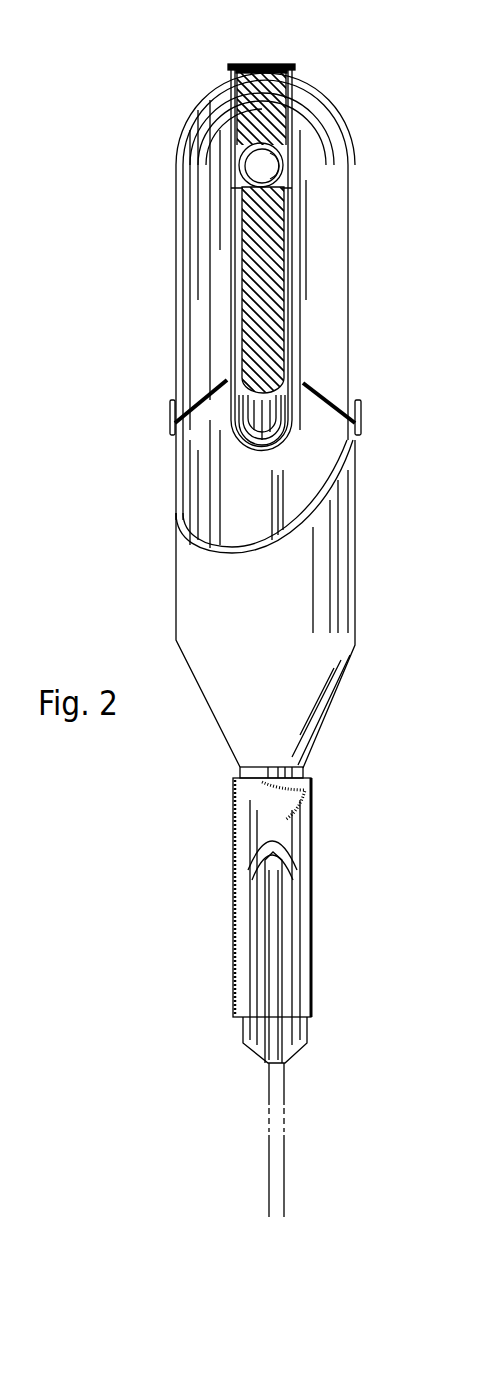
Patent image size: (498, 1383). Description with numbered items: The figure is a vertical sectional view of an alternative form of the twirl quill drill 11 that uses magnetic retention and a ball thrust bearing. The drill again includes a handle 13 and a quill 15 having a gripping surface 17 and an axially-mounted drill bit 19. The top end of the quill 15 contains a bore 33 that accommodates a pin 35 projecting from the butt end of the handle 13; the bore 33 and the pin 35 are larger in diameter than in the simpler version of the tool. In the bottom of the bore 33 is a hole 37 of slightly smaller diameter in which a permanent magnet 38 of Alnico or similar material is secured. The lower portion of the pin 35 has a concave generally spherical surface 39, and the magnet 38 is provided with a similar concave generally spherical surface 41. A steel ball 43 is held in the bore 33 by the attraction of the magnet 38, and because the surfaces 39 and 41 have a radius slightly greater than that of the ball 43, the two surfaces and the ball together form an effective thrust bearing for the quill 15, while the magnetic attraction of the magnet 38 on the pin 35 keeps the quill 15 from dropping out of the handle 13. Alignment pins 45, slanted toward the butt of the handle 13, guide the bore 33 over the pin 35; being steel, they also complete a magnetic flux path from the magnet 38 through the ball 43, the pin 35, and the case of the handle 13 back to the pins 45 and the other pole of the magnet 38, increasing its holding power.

The twirl quill drill 11 is at (368, 519).
The handle 13 is at (355, 317).
The quill 15 is at (302, 772).
The gripping surface 17 is at (307, 813).
The drill bit 19 is at (283, 1105).
The bore 33 is at (270, 190).
The pin 35 is at (277, 65).
The hole 37 is at (290, 257).
The permanent magnet 38 is at (273, 318).
The concave generally spherical surface 39 is at (270, 137).
The concave generally spherical surface 41 is at (255, 198).
The steel ball 43 is at (247, 148).
The alignment pins 45 is at (200, 393).